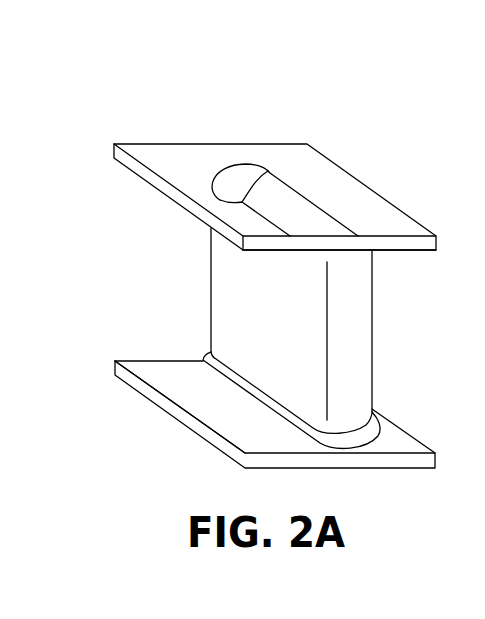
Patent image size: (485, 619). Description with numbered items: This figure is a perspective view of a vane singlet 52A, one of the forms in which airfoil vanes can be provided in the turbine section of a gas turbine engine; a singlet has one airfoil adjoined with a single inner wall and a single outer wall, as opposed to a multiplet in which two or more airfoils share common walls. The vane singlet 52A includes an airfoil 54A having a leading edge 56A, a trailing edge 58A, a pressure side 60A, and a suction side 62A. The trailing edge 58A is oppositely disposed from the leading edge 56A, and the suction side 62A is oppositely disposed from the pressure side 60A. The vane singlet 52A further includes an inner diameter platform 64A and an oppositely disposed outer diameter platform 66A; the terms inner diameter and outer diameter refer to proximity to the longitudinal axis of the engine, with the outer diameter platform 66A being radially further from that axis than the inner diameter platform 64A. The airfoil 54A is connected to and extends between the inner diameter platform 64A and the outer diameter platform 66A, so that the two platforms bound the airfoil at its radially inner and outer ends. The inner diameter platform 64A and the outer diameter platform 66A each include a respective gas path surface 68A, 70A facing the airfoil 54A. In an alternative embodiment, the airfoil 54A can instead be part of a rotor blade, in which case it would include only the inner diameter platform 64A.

The vane singlet 52A is at (83, 143).
The airfoil 54A is at (298, 351).
The leading edge 56A is at (350, 403).
The trailing edge 58A is at (208, 233).
The pressure side 60A is at (228, 305).
The suction side 62A is at (372, 284).
The inner diameter platform 64A is at (173, 412).
The outer diameter platform 66A is at (362, 209).
The gas path surface 68A is at (148, 368).
The gas path surface 70A is at (393, 252).